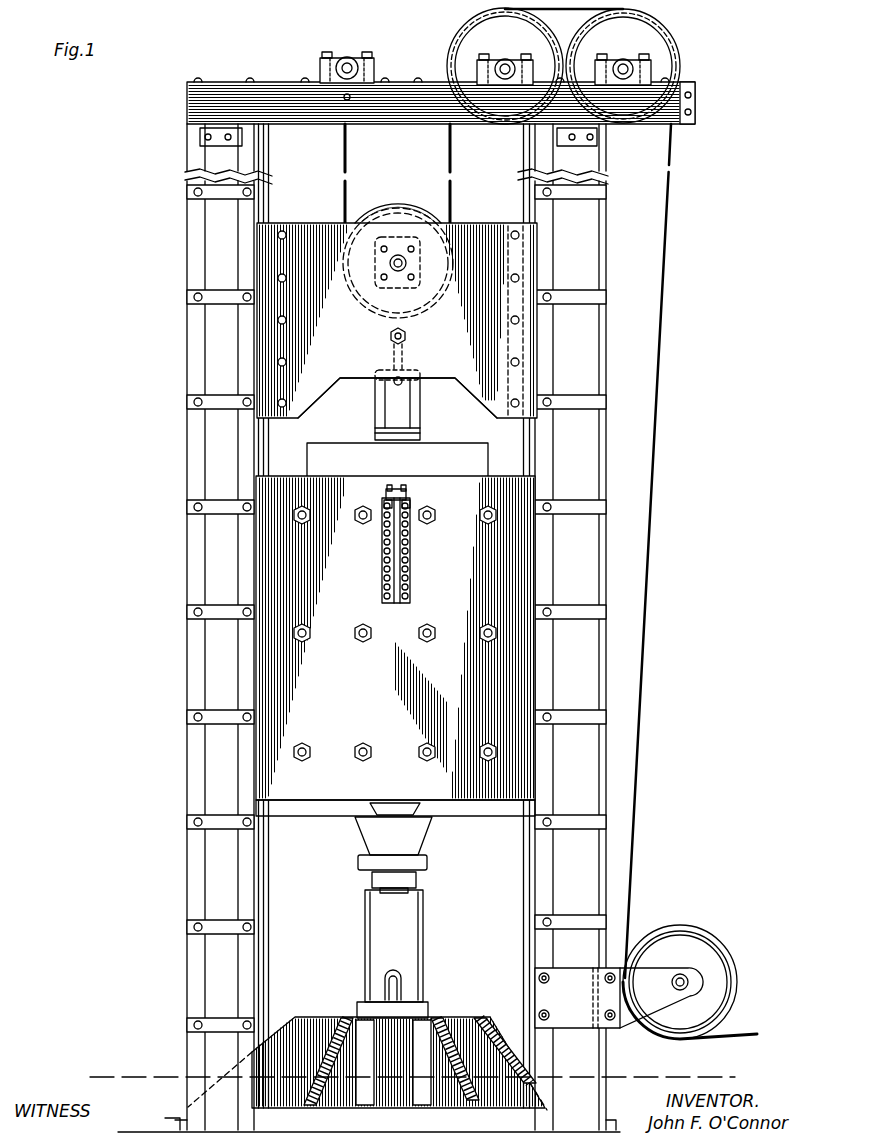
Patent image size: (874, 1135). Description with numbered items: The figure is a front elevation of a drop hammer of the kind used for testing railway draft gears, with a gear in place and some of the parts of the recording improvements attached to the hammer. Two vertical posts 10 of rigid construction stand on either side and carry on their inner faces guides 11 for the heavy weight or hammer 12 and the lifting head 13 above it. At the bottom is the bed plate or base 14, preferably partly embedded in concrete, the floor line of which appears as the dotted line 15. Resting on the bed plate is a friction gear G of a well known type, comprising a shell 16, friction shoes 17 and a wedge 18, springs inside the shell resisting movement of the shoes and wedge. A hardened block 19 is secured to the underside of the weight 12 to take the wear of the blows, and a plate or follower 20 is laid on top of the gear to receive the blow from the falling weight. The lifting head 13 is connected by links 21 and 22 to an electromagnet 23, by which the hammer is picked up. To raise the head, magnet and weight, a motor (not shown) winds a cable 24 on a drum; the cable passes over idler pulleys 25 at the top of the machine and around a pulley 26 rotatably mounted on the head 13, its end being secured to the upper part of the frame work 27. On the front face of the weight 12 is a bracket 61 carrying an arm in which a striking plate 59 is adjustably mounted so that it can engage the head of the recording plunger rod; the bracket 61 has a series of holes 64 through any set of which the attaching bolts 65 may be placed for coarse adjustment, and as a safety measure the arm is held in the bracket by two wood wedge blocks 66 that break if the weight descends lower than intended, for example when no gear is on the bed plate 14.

The vertical posts 10 is at (596, 262).
The guides 11 is at (262, 182).
The weight or hammer 12 is at (395, 646).
The lifting head 13 is at (397, 320).
The bed plate 14 is at (453, 1020).
The floor line 15 is at (638, 1078).
The shell 16 is at (379, 954).
The friction shoes 17 is at (372, 881).
The wedge 18 is at (418, 873).
The hardened block 19 is at (362, 836).
The plate or follower 20 is at (428, 862).
The link 21 is at (397, 384).
The link 22 is at (420, 419).
The electromagnet 23 is at (397, 460).
The cable 24 is at (452, 180).
The idler pulleys 25 is at (602, 32).
The pulley 26 is at (400, 203).
The frame work 27 is at (347, 100).
The plate 59 is at (410, 511).
The bracket 61 is at (412, 559).
The holes 64 is at (410, 577).
The attaching bolts 65 is at (383, 583).
The wood wedge blocks 66 is at (403, 500).
The friction gear G is at (394, 927).